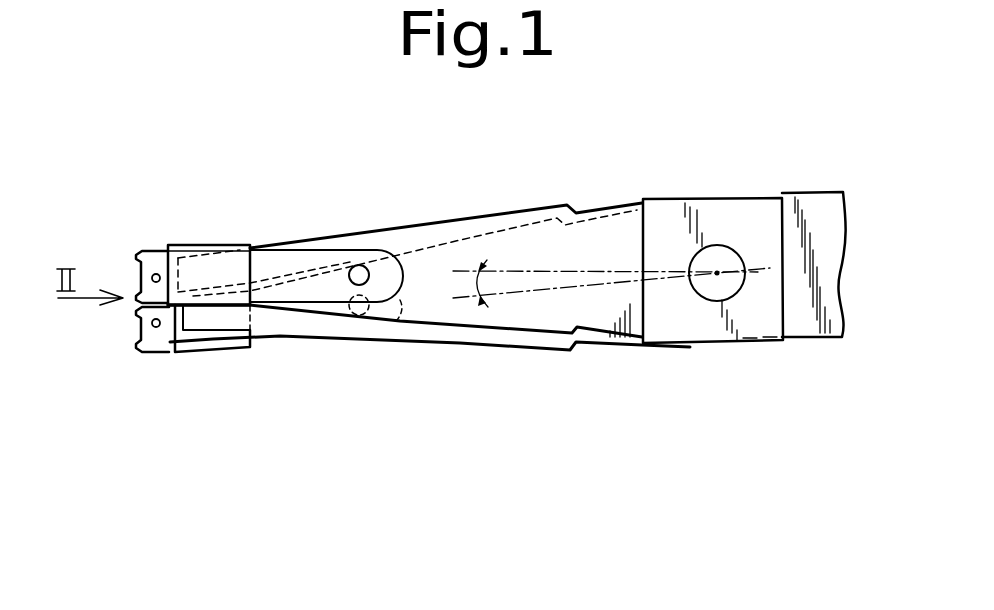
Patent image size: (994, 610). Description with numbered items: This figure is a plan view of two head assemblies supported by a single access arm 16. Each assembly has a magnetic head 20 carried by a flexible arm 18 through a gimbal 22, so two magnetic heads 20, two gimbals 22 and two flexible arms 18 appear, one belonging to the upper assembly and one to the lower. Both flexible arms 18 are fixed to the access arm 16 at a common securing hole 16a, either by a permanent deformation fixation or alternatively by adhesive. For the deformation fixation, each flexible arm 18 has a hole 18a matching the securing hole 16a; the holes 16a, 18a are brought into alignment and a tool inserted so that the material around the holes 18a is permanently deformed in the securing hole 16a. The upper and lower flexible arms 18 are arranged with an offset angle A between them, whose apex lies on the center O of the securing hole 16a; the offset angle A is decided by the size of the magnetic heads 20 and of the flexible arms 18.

The access arm 16 is at (815, 213).
The securing hole 16a is at (729, 241).
The flexible arm 18 is at (527, 240).
The hole 18a is at (710, 262).
The magnetic head 20 is at (188, 253).
The gimbal 22 is at (290, 258).
The center O is at (717, 276).
The offset angle A is at (470, 273).